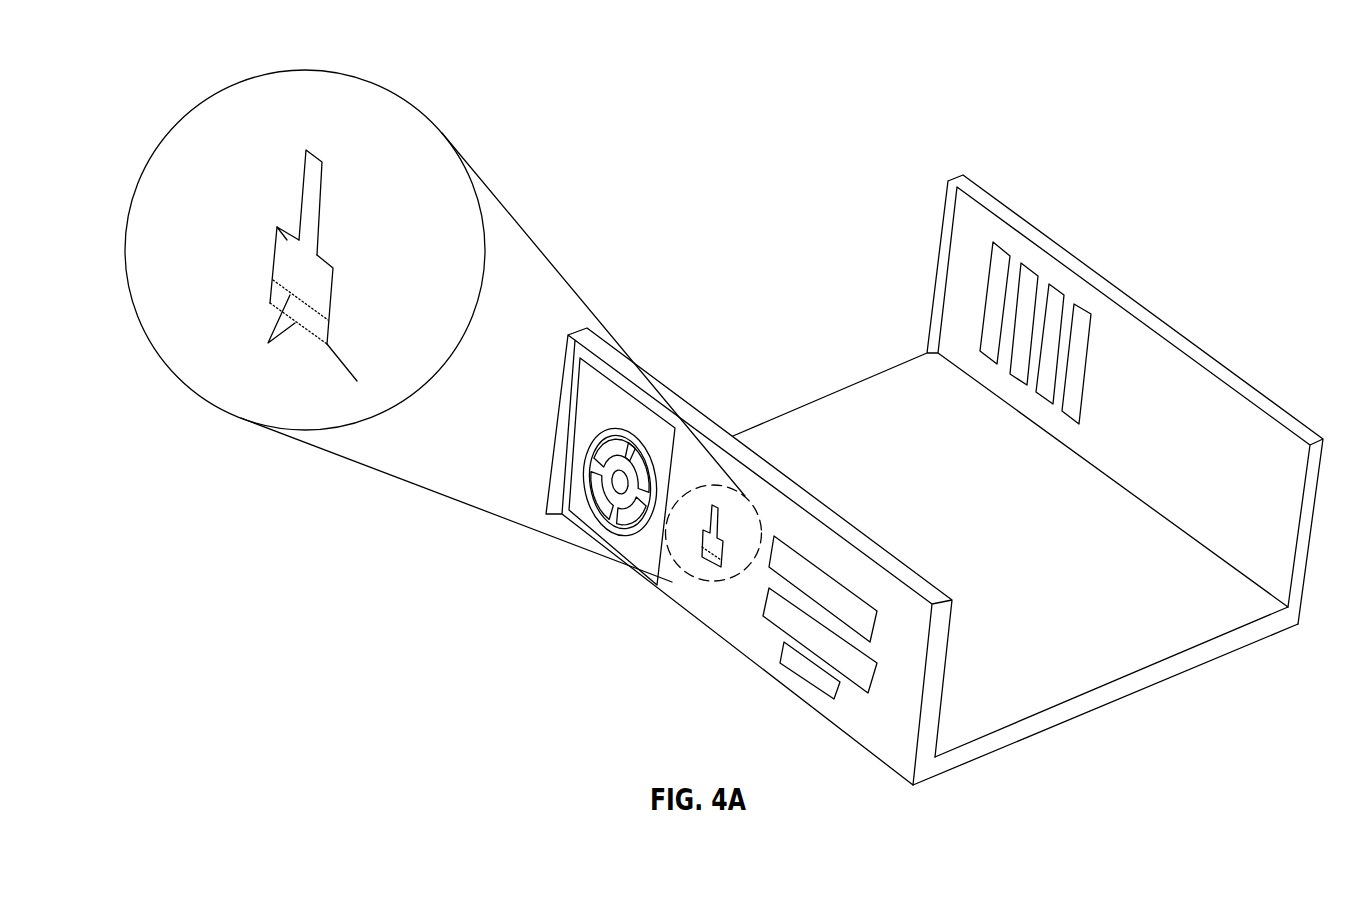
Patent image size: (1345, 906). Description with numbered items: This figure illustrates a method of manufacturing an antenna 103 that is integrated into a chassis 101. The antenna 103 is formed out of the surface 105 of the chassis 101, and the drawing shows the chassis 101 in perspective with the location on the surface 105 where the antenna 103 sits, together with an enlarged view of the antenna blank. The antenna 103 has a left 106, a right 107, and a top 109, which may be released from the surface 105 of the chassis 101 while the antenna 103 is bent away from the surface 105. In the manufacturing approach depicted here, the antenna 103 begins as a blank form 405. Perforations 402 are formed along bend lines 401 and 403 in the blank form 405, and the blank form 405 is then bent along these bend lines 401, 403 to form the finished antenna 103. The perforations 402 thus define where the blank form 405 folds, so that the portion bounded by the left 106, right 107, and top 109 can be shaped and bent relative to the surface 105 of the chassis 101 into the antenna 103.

The chassis 101 is at (1144, 698).
The antenna 103 is at (289, 236).
The surface 105 is at (726, 590).
The left 106 is at (273, 277).
The right 107 is at (327, 297).
The top 109 is at (313, 157).
The bend line 401 is at (357, 381).
The perforations 402 is at (268, 343).
The bend line 403 is at (328, 323).
The blank form 405 is at (280, 230).